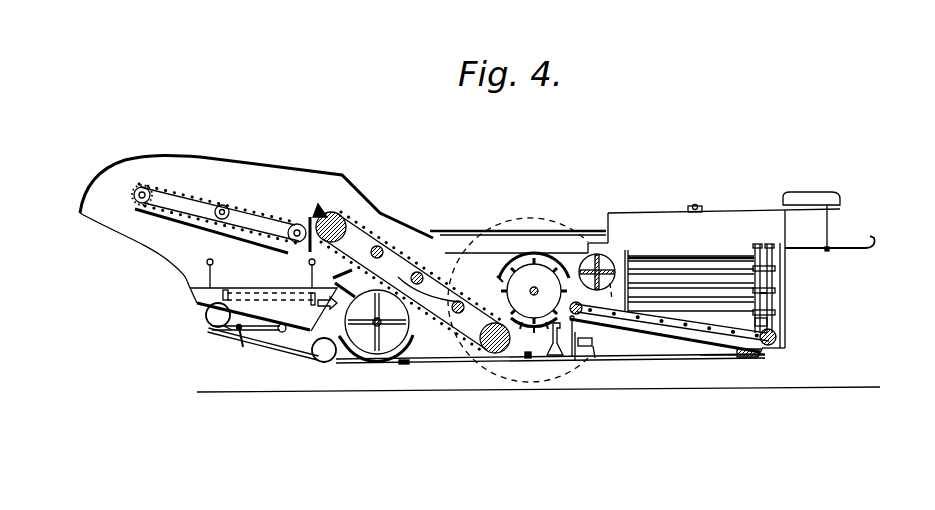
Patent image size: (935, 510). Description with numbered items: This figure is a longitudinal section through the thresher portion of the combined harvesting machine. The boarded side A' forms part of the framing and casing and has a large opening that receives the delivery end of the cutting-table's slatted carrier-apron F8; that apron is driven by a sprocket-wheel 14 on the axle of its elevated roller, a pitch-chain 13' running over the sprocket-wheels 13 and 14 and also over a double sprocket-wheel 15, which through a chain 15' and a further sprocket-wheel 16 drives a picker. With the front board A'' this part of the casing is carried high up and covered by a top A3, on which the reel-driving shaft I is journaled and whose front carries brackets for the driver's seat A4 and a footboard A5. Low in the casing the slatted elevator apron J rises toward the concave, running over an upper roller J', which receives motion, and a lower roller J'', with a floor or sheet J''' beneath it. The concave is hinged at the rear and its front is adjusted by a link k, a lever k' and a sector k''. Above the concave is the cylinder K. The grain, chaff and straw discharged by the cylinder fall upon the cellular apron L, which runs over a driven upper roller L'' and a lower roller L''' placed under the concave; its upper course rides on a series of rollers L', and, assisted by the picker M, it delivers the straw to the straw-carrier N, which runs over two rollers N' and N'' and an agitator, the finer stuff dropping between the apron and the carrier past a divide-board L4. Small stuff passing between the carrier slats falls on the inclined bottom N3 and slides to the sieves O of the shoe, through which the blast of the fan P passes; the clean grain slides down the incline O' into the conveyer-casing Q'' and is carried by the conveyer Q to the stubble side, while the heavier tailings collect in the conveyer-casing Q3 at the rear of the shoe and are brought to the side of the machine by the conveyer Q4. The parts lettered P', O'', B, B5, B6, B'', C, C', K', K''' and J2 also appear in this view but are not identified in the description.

The boarded side A' is at (256, 196).
The divide-board L4 is at (310, 220).
The straw-carrier N is at (219, 209).
The roller N' is at (155, 185).
The roller N'' is at (284, 251).
The inclined bottom N3 is at (168, 218).
The picker M is at (320, 215).
The roller L'' is at (337, 232).
The cellular belt or apron L is at (413, 282).
The rollers L' is at (417, 279).
The roller L''' is at (484, 337).
The fan P is at (377, 322).
The feed wheel casing P' is at (380, 315).
The sieves O is at (263, 295).
The incline O' is at (274, 314).
The lever pin O'' is at (247, 349).
The conveyer Q4 is at (205, 318).
The conveyer-casing Q3 is at (225, 327).
The conveyer Q is at (263, 358).
The conveyer-casing Q'' is at (329, 361).
The frame rail B is at (550, 371).
The frame bracket B5 is at (403, 365).
The cylinder outline C is at (518, 294).
The cylinder bearing block C' is at (541, 369).
The cylinder K is at (534, 291).
The upper wheel guard K' is at (534, 279).
The lower wheel guard K''' is at (525, 351).
The link k is at (569, 336).
The sector k'' is at (584, 358).
The lever k' is at (602, 363).
The grinding wheel J2 is at (600, 267).
The top A3 is at (620, 211).
The front board A'' is at (799, 279).
The reel-driving shaft I is at (694, 205).
The driver's seat A4 is at (822, 193).
The footboard A5 is at (878, 245).
The slatted elevator belt or apron J is at (691, 321).
The sprocket-wheel 14 is at (752, 258).
The sprocket-wheel 16 is at (773, 252).
The chain 15' is at (777, 269).
The pitch-chain 13' is at (780, 294).
The slatted carrier-apron F8 is at (776, 294).
The double sprocket-wheel 15 is at (768, 309).
The sprocket-wheel 13 is at (780, 319).
The roller J' is at (669, 321).
The roller J'' is at (790, 334).
The floor or sheet J''' is at (665, 350).
The frame end rail B6 is at (750, 358).
The frame end block B'' is at (768, 364).